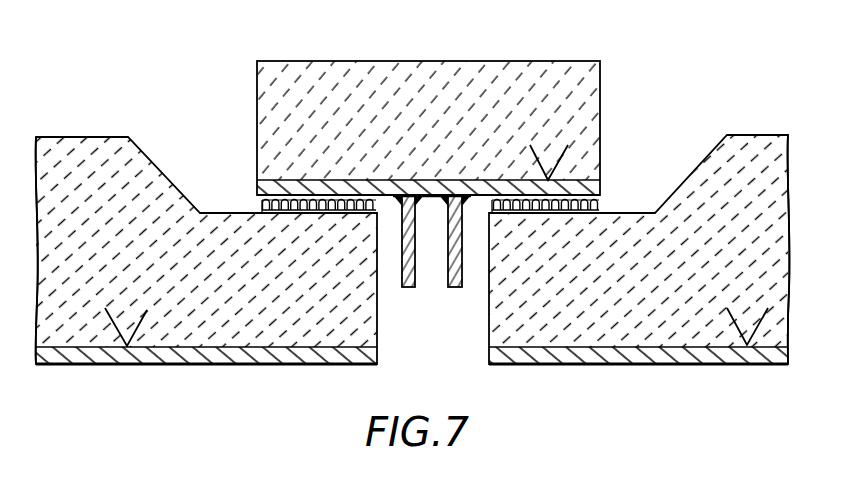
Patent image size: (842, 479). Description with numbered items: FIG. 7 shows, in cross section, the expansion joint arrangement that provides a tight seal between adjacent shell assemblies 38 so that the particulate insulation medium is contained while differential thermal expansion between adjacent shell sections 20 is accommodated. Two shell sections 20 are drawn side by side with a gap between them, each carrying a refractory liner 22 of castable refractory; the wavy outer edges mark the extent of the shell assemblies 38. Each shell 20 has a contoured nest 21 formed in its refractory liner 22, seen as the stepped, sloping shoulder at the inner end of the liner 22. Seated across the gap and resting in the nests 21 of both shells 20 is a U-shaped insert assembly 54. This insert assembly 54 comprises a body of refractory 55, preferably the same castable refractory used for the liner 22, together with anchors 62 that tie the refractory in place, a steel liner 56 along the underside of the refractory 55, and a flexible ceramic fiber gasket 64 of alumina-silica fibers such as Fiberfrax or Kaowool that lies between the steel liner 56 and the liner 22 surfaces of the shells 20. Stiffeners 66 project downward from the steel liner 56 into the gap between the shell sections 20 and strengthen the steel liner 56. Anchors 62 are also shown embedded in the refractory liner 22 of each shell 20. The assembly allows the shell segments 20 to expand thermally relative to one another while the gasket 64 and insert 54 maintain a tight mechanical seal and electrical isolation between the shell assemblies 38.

The shell section 20 is at (352, 364).
The contoured nest 21 is at (232, 213).
The refractory liner 22 is at (133, 284).
The shell assembly 38 is at (36, 170).
The U-shaped insert assembly 54 is at (453, 106).
The refractory 55 is at (499, 113).
The steel liner 56 is at (593, 190).
The anchor 62 is at (558, 152).
The flexible ceramic fiber gasket 64 is at (598, 203).
The stiffener 66 is at (456, 288).